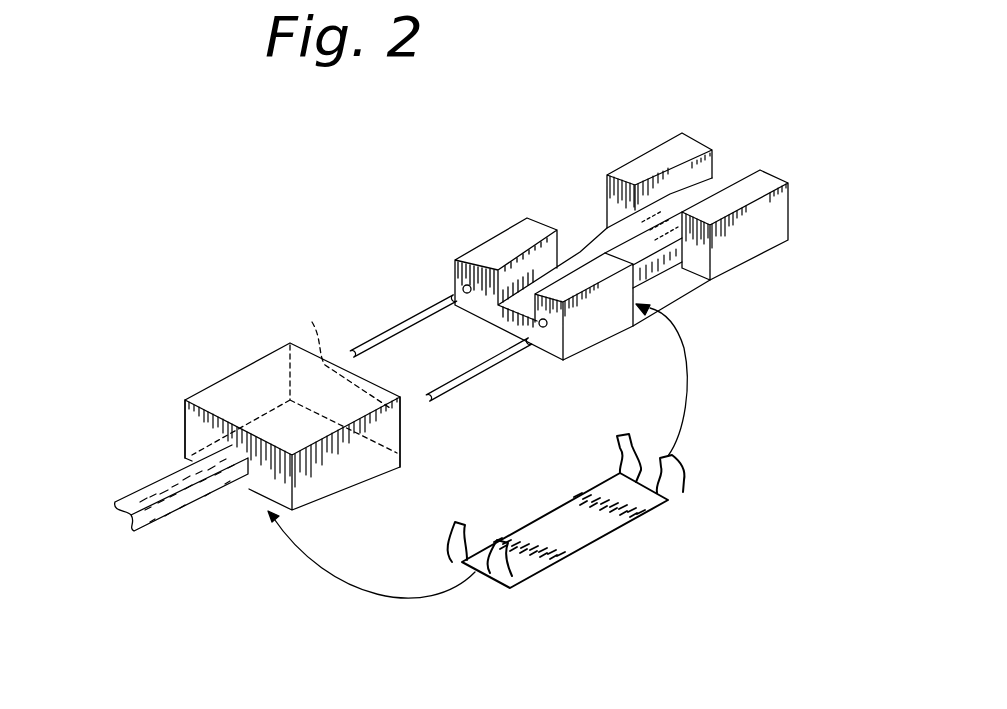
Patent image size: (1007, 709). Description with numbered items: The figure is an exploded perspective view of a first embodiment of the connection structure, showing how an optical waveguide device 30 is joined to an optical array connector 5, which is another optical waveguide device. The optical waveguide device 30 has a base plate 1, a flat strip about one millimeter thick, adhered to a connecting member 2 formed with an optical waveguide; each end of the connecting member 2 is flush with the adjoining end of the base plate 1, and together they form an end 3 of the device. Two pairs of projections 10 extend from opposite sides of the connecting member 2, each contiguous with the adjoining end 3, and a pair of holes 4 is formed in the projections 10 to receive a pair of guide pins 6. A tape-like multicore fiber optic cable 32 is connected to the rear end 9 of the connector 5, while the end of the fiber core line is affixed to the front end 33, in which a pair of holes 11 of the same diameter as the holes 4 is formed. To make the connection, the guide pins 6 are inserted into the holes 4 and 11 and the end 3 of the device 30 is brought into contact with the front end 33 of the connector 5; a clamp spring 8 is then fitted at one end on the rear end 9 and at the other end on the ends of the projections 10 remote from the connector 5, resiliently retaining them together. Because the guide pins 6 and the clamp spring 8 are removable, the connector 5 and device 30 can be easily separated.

The base plate 1 is at (668, 213).
The connecting member 2 is at (598, 325).
The end of the device 3 is at (550, 340).
The holes 4 is at (540, 318).
The optical array connector 5 is at (222, 389).
The guide pins 6 is at (447, 380).
The clamp spring 8 is at (600, 540).
The rear end of the connector 9 is at (186, 427).
The projections 10 is at (613, 256).
The holes 11 is at (342, 351).
The optical waveguide device 30 is at (768, 270).
The tape-like multicore fiber optic cable 32 is at (183, 503).
The front end of the connector 33 is at (400, 427).